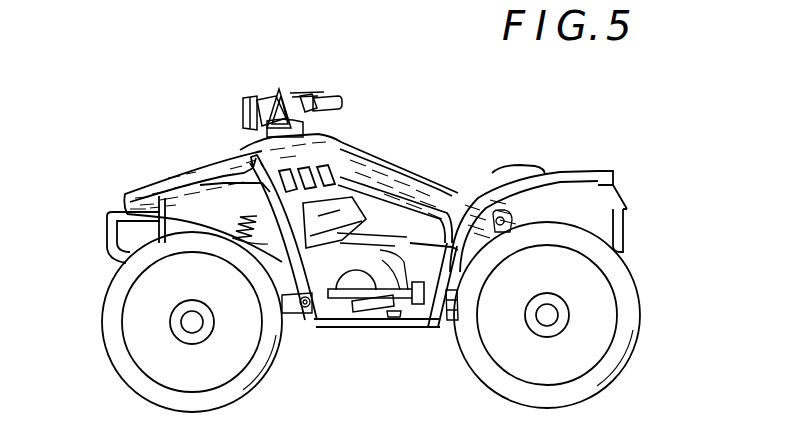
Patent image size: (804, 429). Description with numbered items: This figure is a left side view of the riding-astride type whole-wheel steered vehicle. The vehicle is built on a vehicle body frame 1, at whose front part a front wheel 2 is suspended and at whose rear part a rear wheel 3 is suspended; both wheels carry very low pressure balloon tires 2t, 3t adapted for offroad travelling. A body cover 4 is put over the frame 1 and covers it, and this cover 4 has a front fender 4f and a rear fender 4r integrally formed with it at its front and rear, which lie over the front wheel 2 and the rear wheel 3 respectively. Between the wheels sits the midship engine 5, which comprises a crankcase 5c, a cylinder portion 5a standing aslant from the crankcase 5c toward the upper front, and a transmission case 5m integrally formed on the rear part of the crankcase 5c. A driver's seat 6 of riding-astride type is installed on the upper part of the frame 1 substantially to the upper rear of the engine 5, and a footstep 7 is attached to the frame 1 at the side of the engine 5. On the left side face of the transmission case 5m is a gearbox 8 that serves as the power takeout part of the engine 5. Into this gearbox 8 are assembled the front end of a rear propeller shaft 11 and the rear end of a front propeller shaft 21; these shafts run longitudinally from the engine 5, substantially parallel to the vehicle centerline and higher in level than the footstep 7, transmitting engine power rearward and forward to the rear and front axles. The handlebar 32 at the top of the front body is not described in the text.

The vehicle body frame 1 is at (335, 330).
The front wheel 2 is at (107, 355).
The balloon tire 2t is at (101, 304).
The rear wheel 3 is at (623, 373).
The balloon tire 3t is at (640, 320).
The body cover 4 is at (150, 178).
The front fender 4f is at (204, 188).
The rear fender 4r is at (588, 176).
The engine 5 is at (388, 280).
The cylinder portion 5a is at (340, 214).
The crankcase 5c is at (355, 287).
The transmission case 5m is at (420, 245).
The driver's seat 6 is at (522, 172).
The footstep 7 is at (393, 322).
The gearbox 8 is at (427, 331).
The rear propeller shaft 11 is at (452, 324).
The front propeller shaft 21 is at (350, 322).
The handlebar 32 is at (308, 95).